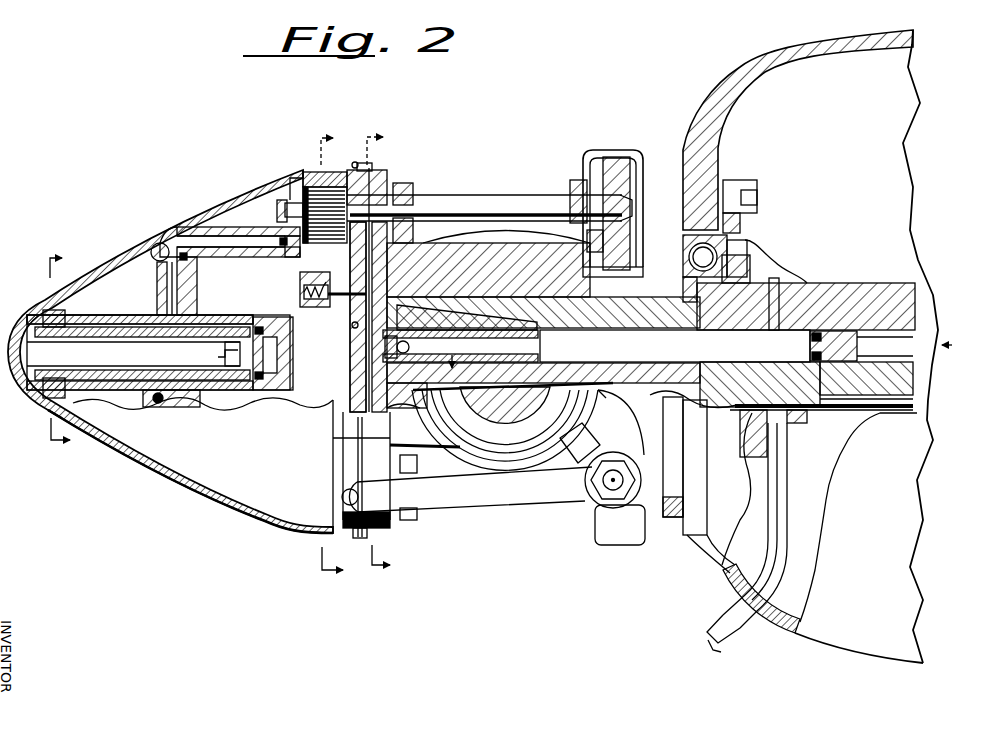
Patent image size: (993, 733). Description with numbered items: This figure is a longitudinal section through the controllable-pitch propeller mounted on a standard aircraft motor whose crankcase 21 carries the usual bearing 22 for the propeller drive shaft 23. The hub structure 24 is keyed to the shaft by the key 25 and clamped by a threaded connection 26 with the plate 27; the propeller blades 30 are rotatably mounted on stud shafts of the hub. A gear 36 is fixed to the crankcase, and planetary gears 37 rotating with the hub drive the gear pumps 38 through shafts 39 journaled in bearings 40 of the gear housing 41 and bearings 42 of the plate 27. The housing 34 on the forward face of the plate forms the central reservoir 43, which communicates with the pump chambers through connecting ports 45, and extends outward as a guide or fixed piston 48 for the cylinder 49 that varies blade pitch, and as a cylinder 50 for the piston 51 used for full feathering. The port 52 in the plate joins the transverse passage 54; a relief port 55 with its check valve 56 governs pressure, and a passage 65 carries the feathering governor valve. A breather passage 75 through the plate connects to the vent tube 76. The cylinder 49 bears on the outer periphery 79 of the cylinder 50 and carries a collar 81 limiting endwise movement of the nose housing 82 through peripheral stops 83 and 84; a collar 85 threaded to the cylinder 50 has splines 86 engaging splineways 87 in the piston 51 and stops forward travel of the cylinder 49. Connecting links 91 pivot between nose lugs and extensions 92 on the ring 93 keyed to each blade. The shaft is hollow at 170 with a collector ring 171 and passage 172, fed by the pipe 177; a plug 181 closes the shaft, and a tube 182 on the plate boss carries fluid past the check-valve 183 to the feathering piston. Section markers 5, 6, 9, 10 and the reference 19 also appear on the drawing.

The section line 5 is at (332, 353).
The section line 6 is at (378, 349).
The section line 9 is at (334, 365).
The section line 10 is at (64, 351).
The cylinder 19 is at (158, 334).
The crankcase 21 is at (768, 63).
The bearing 22 is at (745, 242).
The propeller drive shaft 23 is at (840, 290).
The hub structure 24 is at (452, 256).
The key 25 is at (612, 325).
The threaded connection 26 is at (428, 368).
The plate 27 is at (380, 175).
The propeller blades 30 is at (507, 420).
The housing 34 is at (313, 180).
The gear 36 is at (650, 328).
The planetary gears 37 is at (622, 160).
The gear pumps 38 is at (335, 178).
The shafts 39 is at (515, 210).
The bearings 40 is at (565, 196).
The gear housing 41 is at (600, 152).
The bearings 42 is at (397, 186).
The central reservoir 43 is at (205, 297).
The connecting ports 45 is at (312, 282).
The guide or fixed piston 48 is at (210, 257).
The cylinder 49 is at (150, 249).
The cylinder 50 is at (243, 314).
The piston 51 is at (100, 341).
The port 52 is at (370, 170).
The transverse passage 54 is at (352, 380).
The relief port 55 is at (343, 292).
The check valve 56 is at (339, 321).
The passage 65 is at (392, 405).
The passage 75 is at (352, 328).
The tube 76 is at (355, 162).
The outer periphery 79 is at (112, 315).
The collar 81 is at (180, 236).
The nose housing 82 is at (240, 192).
The peripheral stop 83 is at (180, 252).
The peripheral stop 84 is at (282, 258).
The collar 85 is at (48, 408).
The splines 86 is at (52, 378).
The splineways 87 is at (135, 337).
The connecting links 91 is at (452, 197).
The extensions 92 is at (608, 410).
The ring 93 is at (604, 396).
The hollow drive shaft 170 is at (960, 344).
The collector ring 171 is at (796, 270).
The passage 172 is at (776, 332).
The pipe 177 is at (782, 500).
The plug 181 is at (857, 347).
The tube 182 is at (466, 343).
The check-valve 183 is at (420, 337).